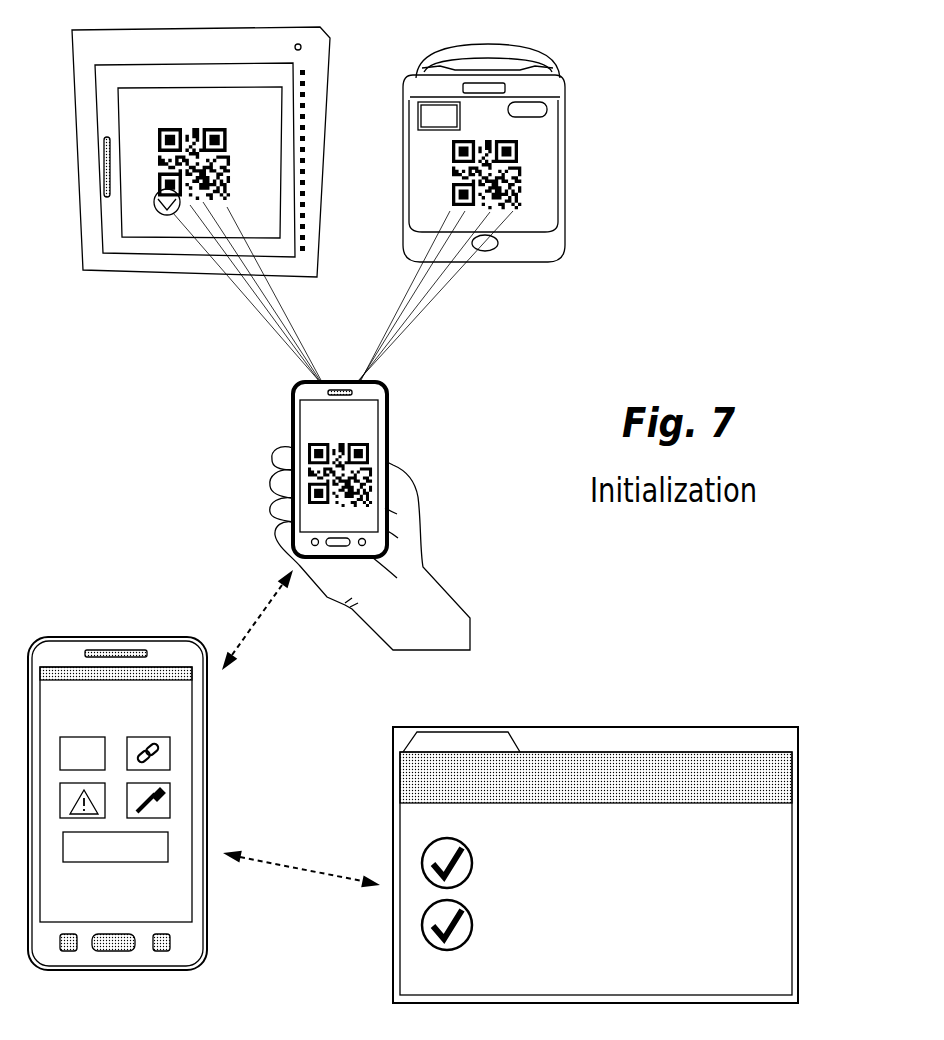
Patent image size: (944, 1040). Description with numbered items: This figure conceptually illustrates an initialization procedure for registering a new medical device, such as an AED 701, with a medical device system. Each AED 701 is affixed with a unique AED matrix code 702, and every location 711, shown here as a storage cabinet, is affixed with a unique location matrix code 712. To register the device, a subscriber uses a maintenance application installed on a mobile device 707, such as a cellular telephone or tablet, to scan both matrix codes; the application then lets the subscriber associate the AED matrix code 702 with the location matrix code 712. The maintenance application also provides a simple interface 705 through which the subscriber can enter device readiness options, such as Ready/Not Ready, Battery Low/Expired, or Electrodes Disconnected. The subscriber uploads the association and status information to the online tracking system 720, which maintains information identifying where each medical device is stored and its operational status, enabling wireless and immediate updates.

The AED 701 is at (563, 113).
The AED matrix code 702 is at (537, 175).
The interface 705 is at (216, 761).
The mobile device 707 is at (422, 427).
The location 711 is at (122, 273).
The location matrix code 712 is at (197, 131).
The online tracking system 720 is at (698, 727).